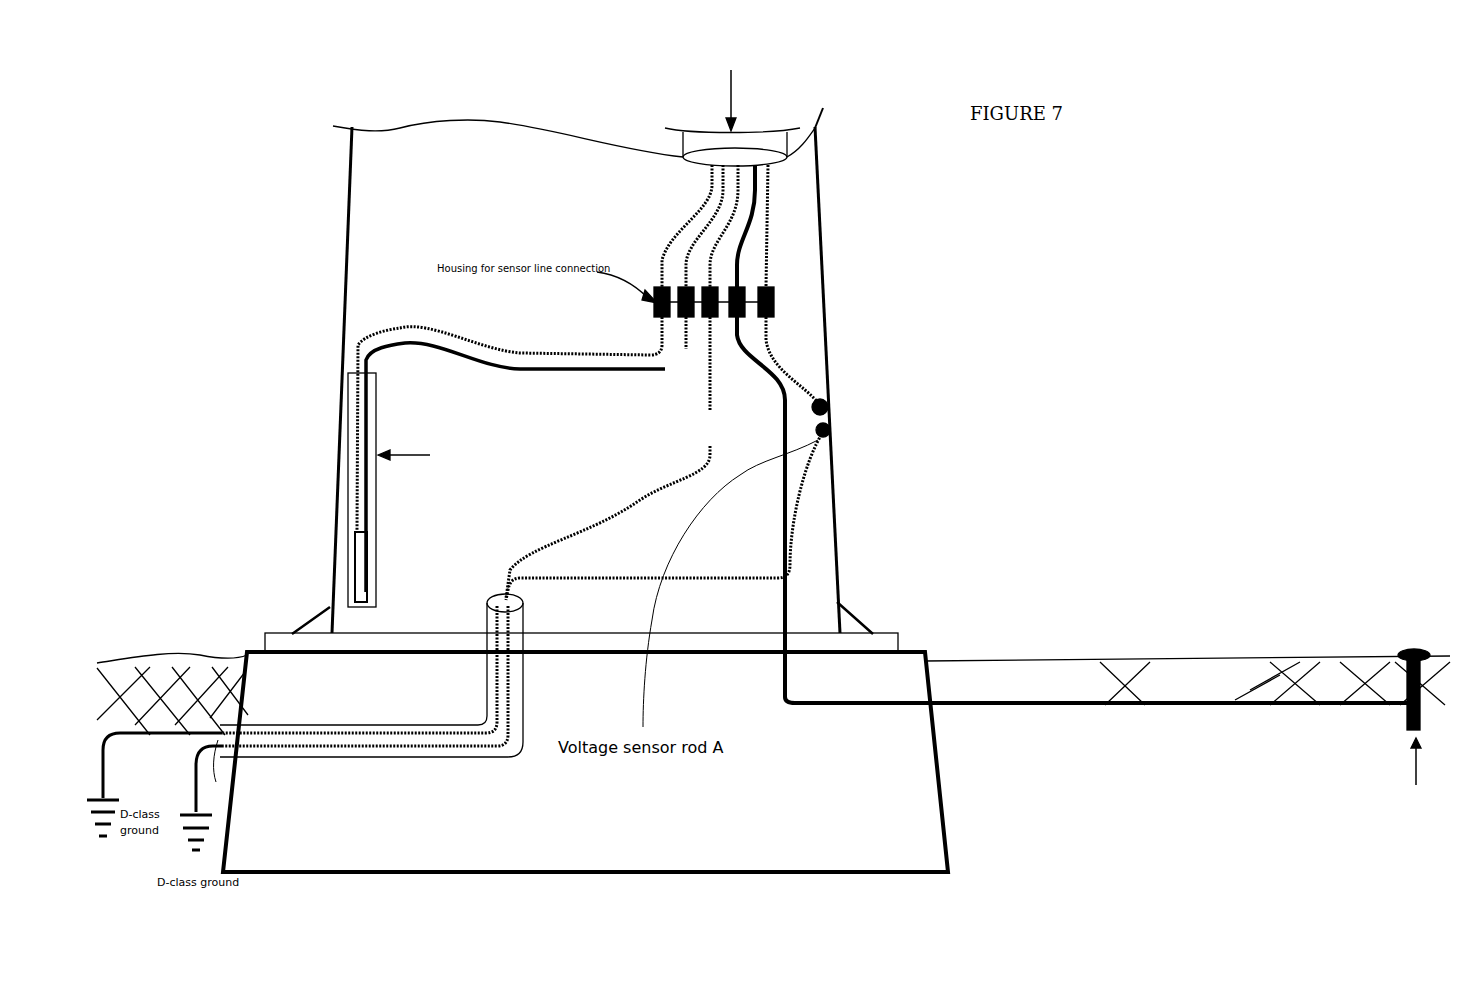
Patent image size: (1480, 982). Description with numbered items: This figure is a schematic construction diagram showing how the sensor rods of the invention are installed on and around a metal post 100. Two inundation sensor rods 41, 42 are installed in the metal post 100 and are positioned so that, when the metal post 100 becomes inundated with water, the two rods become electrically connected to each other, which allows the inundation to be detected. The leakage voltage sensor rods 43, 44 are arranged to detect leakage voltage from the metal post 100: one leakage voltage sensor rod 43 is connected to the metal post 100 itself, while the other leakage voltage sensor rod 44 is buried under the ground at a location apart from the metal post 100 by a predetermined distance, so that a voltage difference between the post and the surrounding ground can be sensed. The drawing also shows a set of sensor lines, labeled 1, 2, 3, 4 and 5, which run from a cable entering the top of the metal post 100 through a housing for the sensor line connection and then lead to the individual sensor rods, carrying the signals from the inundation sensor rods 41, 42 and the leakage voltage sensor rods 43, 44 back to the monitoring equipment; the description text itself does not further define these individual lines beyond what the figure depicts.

The metal post 100 is at (343, 395).
The sensor line 1 is at (574, 347).
The sensor line 2 is at (565, 378).
The sensor line 3 is at (622, 381).
The sensor line 4 is at (1020, 434).
The sensor line 5 is at (664, 382).
The inundation sensor rod 41 is at (833, 410).
The inundation sensor rod 42 is at (1400, 690).
The leakage voltage sensor rod 43 is at (370, 548).
The leakage voltage sensor rod 44 is at (358, 580).